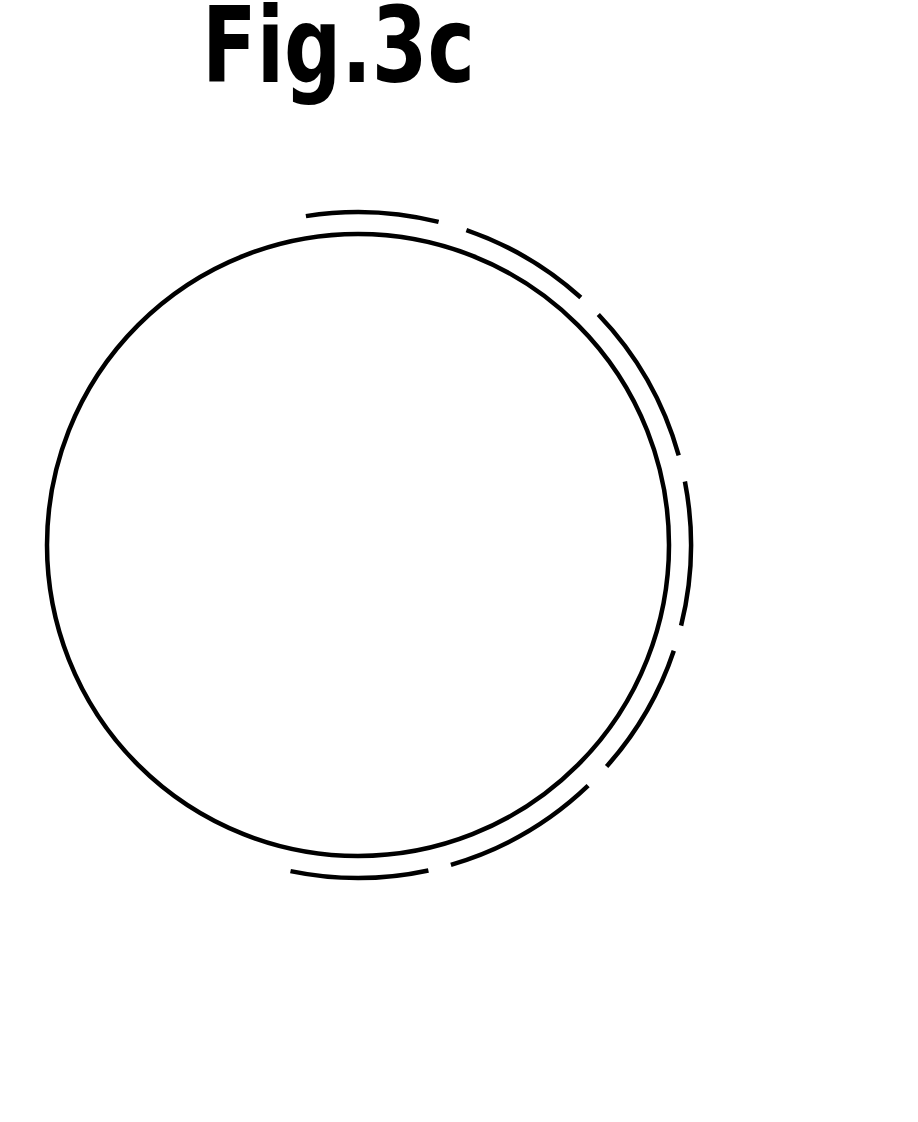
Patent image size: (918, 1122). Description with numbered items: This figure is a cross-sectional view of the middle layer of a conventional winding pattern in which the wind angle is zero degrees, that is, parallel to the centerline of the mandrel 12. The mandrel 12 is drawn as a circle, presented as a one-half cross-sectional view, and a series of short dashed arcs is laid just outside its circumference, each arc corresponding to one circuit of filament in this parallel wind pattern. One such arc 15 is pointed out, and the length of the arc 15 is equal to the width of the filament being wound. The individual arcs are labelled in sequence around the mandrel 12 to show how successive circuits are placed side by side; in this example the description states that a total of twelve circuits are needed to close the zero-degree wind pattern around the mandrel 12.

The mandrel 12 is at (117, 349).
The arc 15 is at (336, 212).